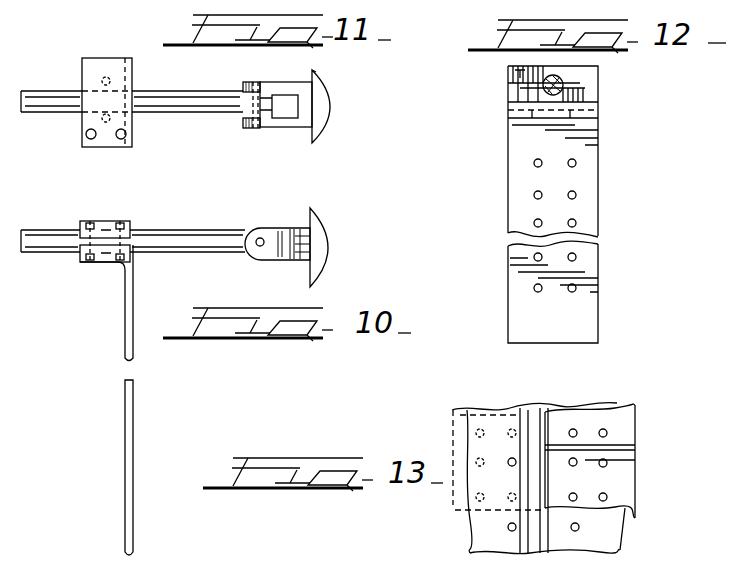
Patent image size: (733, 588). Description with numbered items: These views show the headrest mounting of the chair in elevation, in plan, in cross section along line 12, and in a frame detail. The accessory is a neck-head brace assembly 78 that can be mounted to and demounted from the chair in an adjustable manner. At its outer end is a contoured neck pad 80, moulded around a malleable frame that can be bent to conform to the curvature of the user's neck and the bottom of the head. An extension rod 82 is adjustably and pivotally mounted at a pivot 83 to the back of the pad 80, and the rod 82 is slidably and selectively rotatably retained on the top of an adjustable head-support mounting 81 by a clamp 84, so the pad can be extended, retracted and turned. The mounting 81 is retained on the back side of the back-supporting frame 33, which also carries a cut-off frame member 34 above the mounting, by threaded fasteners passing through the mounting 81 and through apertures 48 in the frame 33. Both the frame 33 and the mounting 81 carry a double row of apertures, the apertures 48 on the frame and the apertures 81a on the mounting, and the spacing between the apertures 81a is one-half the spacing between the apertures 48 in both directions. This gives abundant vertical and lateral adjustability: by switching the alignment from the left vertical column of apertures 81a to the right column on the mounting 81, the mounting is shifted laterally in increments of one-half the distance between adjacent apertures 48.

In FIG. 10, the section line 12 is at (135, 207).
In FIG. 13, the back-supporting frame 33 is at (480, 537).
In FIG. 12, the frame member 34 is at (561, 4).
In FIG. 13, the apertures 48 is at (514, 529).
In FIG. 10, the neck-head brace assembly 78 is at (84, 291).
In FIG. 11, the contoured neck pad 80 is at (320, 104).
In FIG. 10, the contoured neck pad 80 is at (322, 245).
In FIG. 10, the adjustable head-support mounting 81 is at (125, 331).
In FIG. 12, the adjustable head-support mounting 81 is at (518, 183).
In FIG. 13, the adjustable head-support mounting 81 is at (622, 450).
In FIG. 12, the apertures 81a is at (534, 163).
In FIG. 13, the apertures 81a is at (607, 464).
In FIG. 11, the extension rod 82 is at (163, 113).
In FIG. 12, the extension rod 82 is at (512, 75).
In FIG. 11, the pivot mounting 83 is at (258, 82).
In FIG. 10, the pivot mounting 83 is at (263, 220).
In FIG. 11, the clamp 84 is at (102, 58).
In FIG. 10, the clamp 84 is at (108, 221).
In FIG. 12, the clamp 84 is at (585, 77).